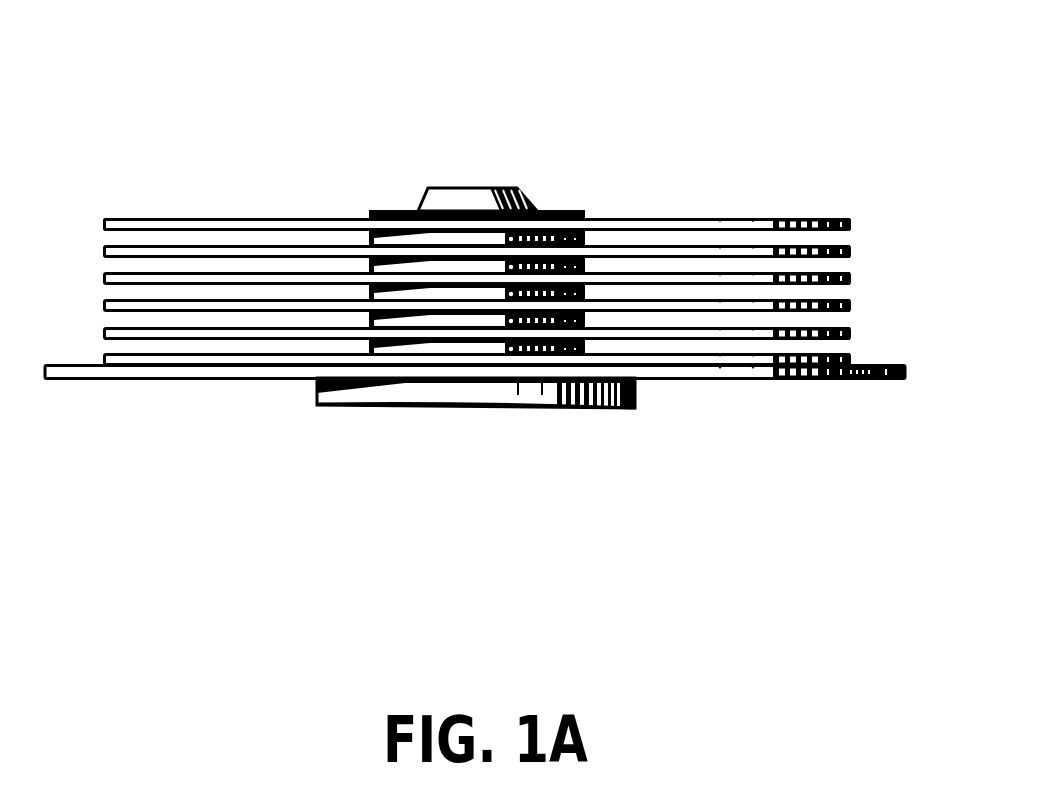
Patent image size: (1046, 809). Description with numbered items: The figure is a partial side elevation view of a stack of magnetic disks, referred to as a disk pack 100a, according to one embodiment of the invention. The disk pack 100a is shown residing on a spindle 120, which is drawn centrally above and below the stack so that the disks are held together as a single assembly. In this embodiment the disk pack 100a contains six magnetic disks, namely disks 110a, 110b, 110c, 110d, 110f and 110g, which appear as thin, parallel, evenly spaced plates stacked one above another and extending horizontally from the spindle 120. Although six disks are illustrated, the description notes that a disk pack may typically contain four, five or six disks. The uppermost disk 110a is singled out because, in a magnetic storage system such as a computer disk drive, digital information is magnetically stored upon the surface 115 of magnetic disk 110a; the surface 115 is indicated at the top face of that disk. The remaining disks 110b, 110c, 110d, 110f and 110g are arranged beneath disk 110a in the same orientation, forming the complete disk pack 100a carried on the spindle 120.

The disk pack 100a is at (680, 140).
The surface 115 is at (136, 204).
The spindle 120 is at (466, 186).
The magnetic disk 110a is at (851, 224).
The magnetic disk 110b is at (851, 251).
The magnetic disk 110c is at (851, 279).
The magnetic disk 110d is at (851, 306).
The magnetic disk 110f is at (851, 334).
The magnetic disk 110g is at (851, 358).